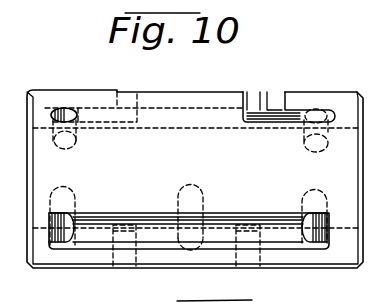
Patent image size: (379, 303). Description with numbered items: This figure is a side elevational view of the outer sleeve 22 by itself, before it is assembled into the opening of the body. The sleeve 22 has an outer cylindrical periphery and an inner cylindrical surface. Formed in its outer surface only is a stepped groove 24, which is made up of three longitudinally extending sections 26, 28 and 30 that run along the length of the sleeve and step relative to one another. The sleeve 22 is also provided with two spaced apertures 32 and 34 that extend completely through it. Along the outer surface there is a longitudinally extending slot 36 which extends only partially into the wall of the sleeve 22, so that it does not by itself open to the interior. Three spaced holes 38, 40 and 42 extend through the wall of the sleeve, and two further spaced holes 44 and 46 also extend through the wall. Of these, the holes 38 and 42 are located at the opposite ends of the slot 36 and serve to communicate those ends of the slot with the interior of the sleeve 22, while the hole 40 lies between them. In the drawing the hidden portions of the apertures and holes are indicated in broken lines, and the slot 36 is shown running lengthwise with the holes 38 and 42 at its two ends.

The outer sleeve 22 is at (341, 91).
The stepped groove 24 is at (197, 104).
The longitudinally extending section 26 is at (282, 110).
The longitudinally extending section 28 is at (167, 107).
The longitudinally extending section 30 is at (101, 103).
The aperture 32 is at (63, 110).
The aperture 34 is at (328, 132).
The longitudinally extending slot 36 is at (148, 213).
The hole 38 is at (70, 213).
The hole 40 is at (198, 198).
The hole 42 is at (302, 222).
The hole 44 is at (137, 252).
The hole 46 is at (261, 262).